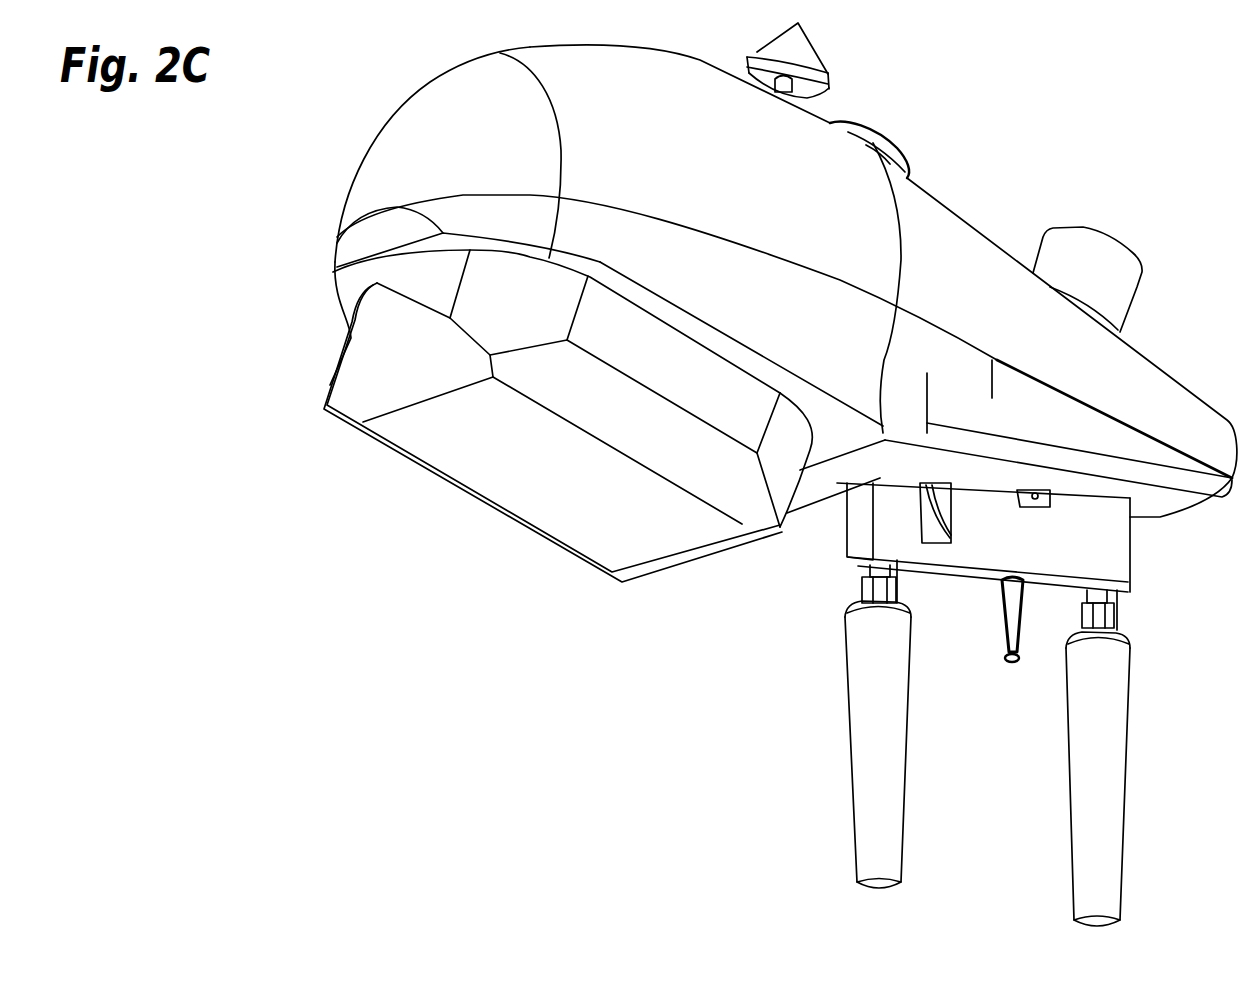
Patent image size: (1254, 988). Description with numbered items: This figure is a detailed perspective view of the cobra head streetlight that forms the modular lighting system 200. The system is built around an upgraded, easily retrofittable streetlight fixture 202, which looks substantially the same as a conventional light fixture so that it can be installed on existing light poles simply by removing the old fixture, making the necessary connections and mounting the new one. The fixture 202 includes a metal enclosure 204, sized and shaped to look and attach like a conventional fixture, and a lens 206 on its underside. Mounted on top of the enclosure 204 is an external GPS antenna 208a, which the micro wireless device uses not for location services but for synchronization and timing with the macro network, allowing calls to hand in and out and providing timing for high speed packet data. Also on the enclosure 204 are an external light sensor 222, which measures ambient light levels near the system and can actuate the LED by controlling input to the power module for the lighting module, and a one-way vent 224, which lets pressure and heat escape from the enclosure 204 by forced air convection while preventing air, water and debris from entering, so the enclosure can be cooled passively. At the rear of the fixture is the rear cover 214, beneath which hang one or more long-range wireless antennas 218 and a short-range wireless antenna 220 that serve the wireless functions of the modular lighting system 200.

The modular lighting system 200 is at (149, 196).
The streetlight fixture 202 is at (387, 82).
The enclosure 204 is at (1022, 90).
The lens 206 is at (624, 582).
The GPS antenna 208a is at (753, 52).
The rear cover 214 is at (1162, 517).
The long-range wireless antenna 218 is at (852, 817).
The short-range wireless antenna 220 is at (1017, 665).
The external light sensor 222 is at (1108, 238).
The one-way vent 224 is at (870, 122).